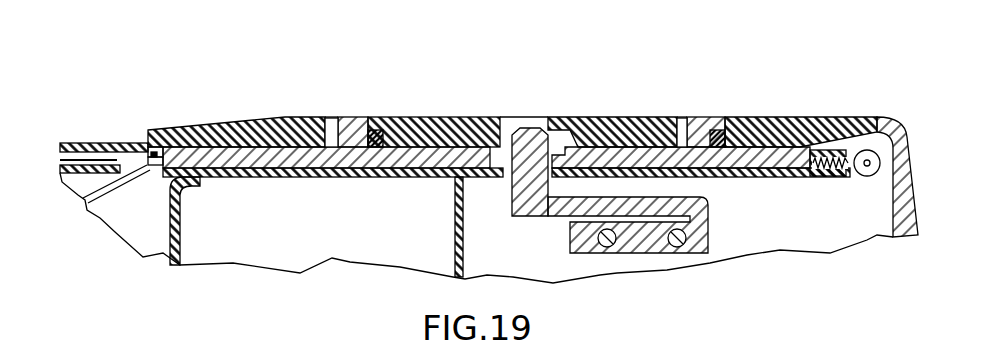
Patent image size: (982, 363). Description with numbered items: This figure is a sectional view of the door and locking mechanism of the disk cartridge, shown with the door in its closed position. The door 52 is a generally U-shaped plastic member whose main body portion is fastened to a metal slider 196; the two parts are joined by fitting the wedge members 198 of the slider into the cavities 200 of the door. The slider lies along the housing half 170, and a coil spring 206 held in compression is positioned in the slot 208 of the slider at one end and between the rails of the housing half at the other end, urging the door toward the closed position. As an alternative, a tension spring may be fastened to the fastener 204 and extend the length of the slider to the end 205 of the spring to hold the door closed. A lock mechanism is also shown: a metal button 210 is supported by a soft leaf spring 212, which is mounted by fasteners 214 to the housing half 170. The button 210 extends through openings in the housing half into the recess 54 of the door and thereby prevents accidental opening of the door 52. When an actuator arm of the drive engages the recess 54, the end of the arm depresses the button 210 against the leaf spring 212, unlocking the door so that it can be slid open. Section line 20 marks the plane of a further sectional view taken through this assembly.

The section line 20- 20 is at (750, 218).
The door 52 is at (273, 116).
The recess 54 is at (520, 124).
The housing half 170 is at (97, 143).
The metal slider 196 is at (415, 133).
The wedge members 198 is at (360, 117).
The cavities 200 is at (332, 117).
The fastener 204 is at (873, 177).
The end 205 is at (152, 133).
The coil spring 206 is at (103, 197).
The slot 208 is at (145, 147).
The button 210 is at (540, 135).
The leaf spring 212 is at (567, 218).
The fasteners 214 is at (607, 247).